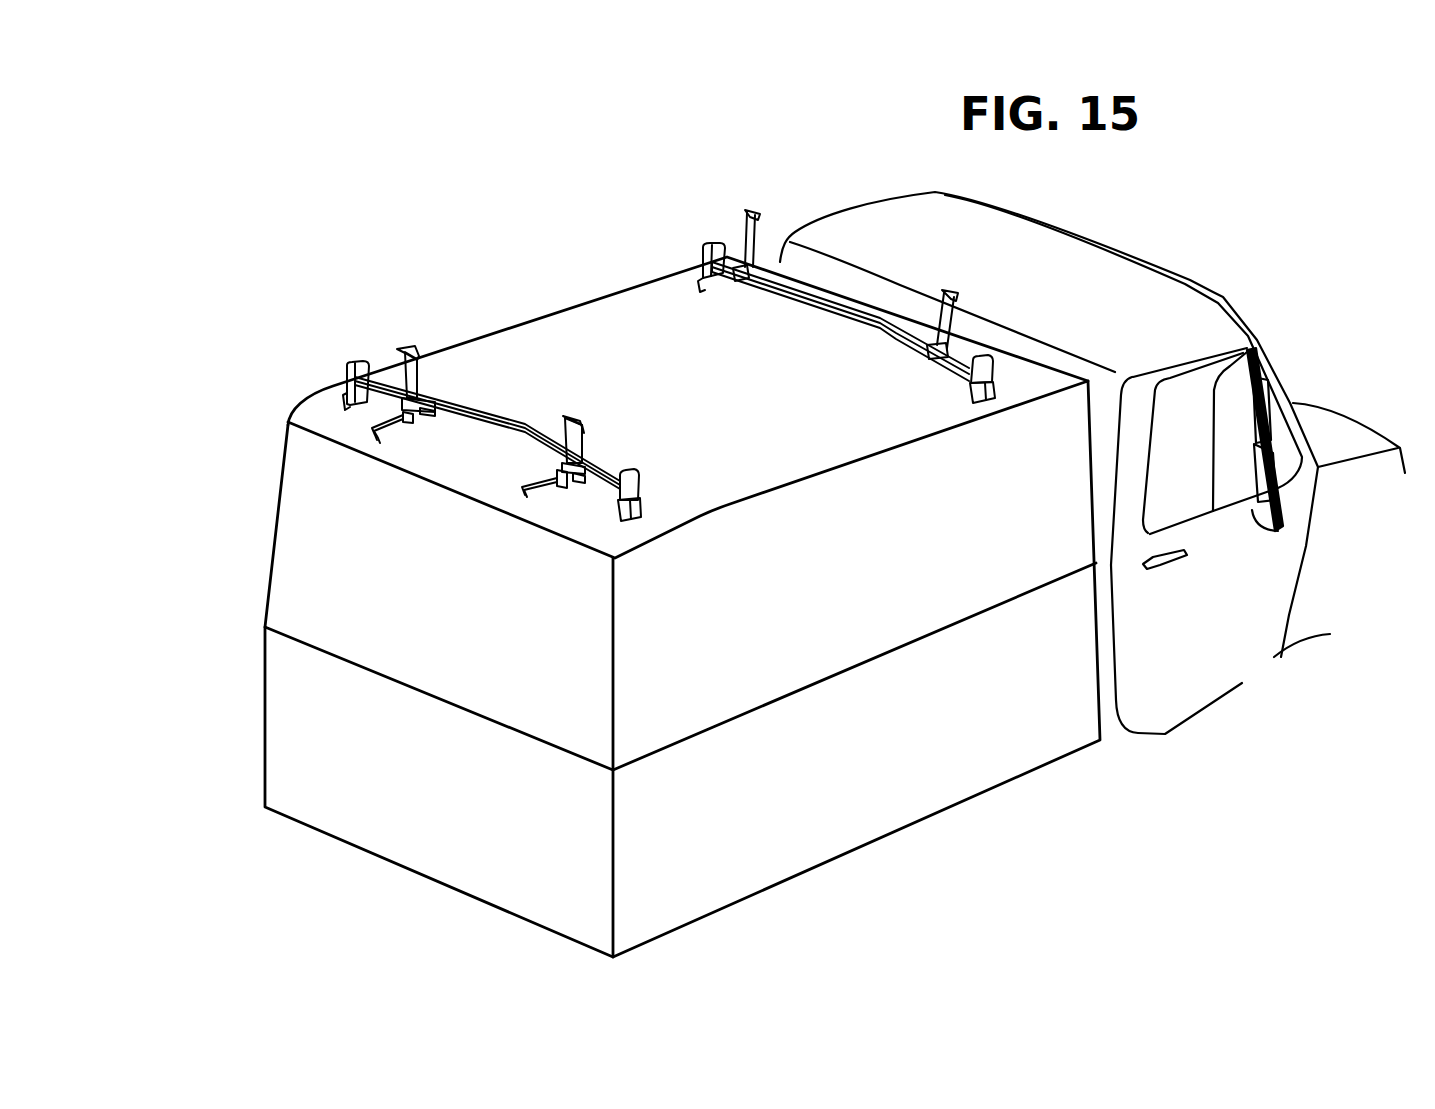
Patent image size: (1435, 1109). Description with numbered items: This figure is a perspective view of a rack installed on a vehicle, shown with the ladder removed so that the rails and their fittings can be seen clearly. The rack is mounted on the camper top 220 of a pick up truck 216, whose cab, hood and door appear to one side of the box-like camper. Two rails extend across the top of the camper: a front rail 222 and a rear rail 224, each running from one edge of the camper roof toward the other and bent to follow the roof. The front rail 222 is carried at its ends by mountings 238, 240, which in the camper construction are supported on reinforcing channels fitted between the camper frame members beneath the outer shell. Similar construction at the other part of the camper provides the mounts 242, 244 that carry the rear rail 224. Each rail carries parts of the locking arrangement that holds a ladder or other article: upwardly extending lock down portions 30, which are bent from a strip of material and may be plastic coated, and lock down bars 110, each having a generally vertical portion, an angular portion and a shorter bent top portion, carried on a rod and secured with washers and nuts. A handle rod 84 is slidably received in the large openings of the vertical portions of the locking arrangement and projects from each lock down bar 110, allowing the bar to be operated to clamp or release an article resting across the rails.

The object engaging or lock down portion 30 is at (751, 210).
The handle rod 84 is at (374, 441).
The lock down bar 110 is at (415, 352).
The pick up truck 216 is at (1325, 413).
The camper top 220 is at (252, 569).
The front rail 222 is at (835, 293).
The rear rail 224 is at (493, 413).
The mounting 238 is at (988, 403).
The mounting 240 is at (704, 248).
The mount 242 is at (641, 506).
The mount 244 is at (362, 360).